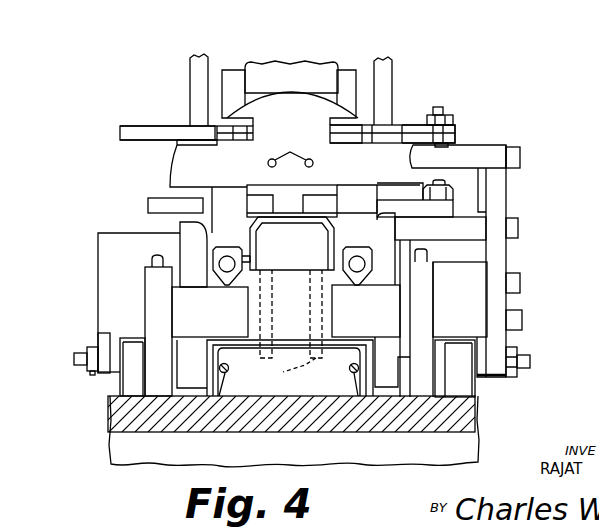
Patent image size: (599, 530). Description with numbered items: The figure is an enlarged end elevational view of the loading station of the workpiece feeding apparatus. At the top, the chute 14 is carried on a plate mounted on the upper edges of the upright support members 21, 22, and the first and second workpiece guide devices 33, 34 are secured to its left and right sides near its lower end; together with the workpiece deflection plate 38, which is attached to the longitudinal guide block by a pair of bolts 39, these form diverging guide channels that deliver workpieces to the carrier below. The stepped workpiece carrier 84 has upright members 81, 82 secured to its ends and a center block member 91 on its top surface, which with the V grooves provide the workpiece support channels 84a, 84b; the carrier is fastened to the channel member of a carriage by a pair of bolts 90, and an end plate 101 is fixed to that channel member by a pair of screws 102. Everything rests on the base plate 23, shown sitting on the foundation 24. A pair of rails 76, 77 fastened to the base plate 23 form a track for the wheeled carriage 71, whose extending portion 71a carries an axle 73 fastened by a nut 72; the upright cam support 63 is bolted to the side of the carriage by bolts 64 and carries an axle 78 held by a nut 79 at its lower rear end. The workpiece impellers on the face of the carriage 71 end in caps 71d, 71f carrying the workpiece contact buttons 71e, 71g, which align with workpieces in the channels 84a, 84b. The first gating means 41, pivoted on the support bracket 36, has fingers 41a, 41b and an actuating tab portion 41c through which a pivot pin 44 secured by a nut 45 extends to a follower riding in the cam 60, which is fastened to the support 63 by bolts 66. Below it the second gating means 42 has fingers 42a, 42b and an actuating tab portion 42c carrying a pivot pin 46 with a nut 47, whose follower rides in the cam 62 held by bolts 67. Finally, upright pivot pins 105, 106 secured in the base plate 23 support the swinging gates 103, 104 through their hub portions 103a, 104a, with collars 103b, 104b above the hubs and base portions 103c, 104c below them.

The chute 14 is at (278, 62).
The upright support member 21 is at (196, 62).
The upright support member 22 is at (383, 62).
The base plate 23 is at (110, 410).
The foundation 24 is at (112, 452).
The first workpiece guide device 33 is at (234, 70).
The second workpiece guide device 34 is at (346, 70).
The support bracket 36 is at (276, 185).
The workpiece deflection plate 38 is at (172, 165).
The bolts 39 is at (290, 150).
The first gating means 41 is at (110, 131).
The first workpiece contacting finger 41a is at (336, 135).
The second workpiece contacting finger 41b is at (158, 126).
The actuating tab portion 41c is at (455, 131).
The second gating means 42 is at (138, 206).
The first workpiece contacting finger 42a is at (306, 185).
The second workpiece contacting finger 42b is at (166, 199).
The actuating tab portion 42c is at (412, 223).
The pivot pin 44 is at (440, 107).
The nut 45 is at (429, 121).
The pivot pin 46 is at (447, 182).
The nut 47 is at (455, 195).
The cam 60 is at (467, 152).
The cam 62 is at (498, 263).
The upright cam support 63 is at (500, 243).
The bolts 64 is at (523, 320).
The bolts 66 is at (518, 155).
The bolts 67 is at (520, 228).
The wheeled carriage 71 is at (122, 292).
The extending portion 71a is at (108, 353).
The cap 71d is at (228, 247).
The workpiece contact button 71e is at (238, 268).
The cap 71f is at (357, 247).
The workpiece contact button 71g is at (355, 283).
The nut 72 is at (92, 374).
The axle 73 is at (72, 359).
The rail 76 is at (128, 383).
The rail 77 is at (470, 390).
The axle 78 is at (531, 362).
The nut 79 is at (506, 378).
The upright member 81 is at (185, 232).
The upright member 82 is at (425, 257).
The workpiece carrier 84 is at (300, 327).
The workpiece support channel 84a is at (246, 259).
The workpiece support channel 84b is at (337, 243).
The bolts 90 is at (279, 373).
The center block member 91 is at (276, 240).
The end plate 101 is at (332, 391).
The screws 102 is at (228, 372).
The swinging gate 103 is at (232, 335).
The hub portion 103a is at (152, 314).
The collar 103b is at (162, 278).
The base portion 103c is at (160, 386).
The swinging gate 104 is at (365, 327).
The hub portion 104a is at (425, 321).
The collar 104b is at (421, 286).
The base portion 104c is at (425, 383).
The pivot pin 105 is at (155, 257).
The pivot pin 106 is at (430, 277).